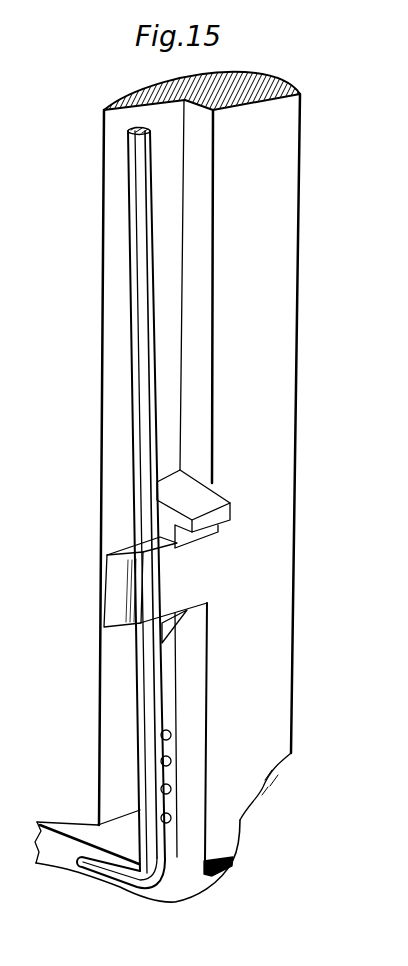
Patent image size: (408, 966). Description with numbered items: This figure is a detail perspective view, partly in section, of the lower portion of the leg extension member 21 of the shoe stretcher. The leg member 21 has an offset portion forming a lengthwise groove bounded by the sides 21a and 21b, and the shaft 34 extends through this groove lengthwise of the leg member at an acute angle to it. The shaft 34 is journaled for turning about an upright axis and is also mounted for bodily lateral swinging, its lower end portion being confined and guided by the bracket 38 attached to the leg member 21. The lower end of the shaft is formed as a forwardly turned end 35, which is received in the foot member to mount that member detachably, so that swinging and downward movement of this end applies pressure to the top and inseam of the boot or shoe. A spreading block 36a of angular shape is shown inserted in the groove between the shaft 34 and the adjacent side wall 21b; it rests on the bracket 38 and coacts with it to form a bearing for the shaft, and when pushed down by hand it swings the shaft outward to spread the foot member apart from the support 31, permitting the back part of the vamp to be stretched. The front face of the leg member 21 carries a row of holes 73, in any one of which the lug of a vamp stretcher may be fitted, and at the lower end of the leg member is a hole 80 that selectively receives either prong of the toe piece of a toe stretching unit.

The leg extension member 21 is at (288, 355).
The groove 21a is at (120, 228).
The side of groove 21b is at (200, 288).
The shaft 34 is at (142, 447).
The forwardly turned lower end 35 is at (97, 872).
The stop block 36a is at (212, 498).
The bracket 38 is at (117, 577).
The support 31 is at (88, 797).
The holes 73 is at (171, 789).
The hole 80 is at (172, 820).